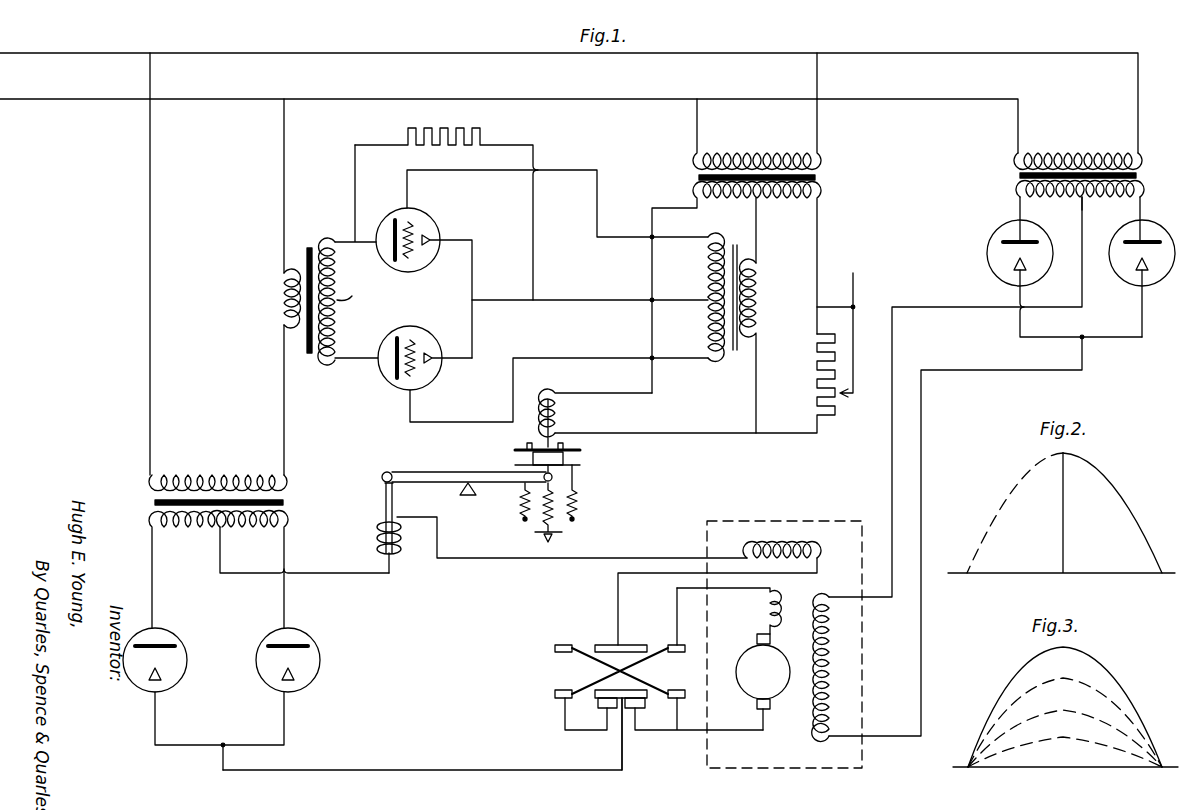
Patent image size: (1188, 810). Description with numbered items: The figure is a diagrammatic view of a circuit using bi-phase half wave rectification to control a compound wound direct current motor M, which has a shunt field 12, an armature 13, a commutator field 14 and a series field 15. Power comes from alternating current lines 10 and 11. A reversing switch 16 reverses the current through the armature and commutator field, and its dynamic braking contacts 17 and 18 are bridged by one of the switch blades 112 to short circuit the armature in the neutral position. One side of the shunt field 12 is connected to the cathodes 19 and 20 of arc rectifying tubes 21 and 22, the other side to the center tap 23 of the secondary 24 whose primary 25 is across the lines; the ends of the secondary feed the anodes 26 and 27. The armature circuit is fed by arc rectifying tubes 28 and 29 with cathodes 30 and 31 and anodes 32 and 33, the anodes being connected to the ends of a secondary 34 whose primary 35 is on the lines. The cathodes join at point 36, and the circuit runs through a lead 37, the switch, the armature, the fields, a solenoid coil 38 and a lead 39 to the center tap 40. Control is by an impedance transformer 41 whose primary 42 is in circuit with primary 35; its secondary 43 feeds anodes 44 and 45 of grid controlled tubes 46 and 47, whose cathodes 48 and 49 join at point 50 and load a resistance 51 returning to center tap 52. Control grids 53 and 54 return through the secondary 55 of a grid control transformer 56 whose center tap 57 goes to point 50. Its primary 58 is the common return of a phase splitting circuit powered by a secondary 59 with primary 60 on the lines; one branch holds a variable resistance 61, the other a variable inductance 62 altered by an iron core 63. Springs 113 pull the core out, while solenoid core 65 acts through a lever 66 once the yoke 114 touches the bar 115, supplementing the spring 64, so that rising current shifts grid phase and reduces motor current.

The alternating current line 10 is at (98, 62).
The alternating current line 11 is at (97, 108).
The shunt field 12 is at (826, 656).
The armature 13 is at (752, 678).
The commutator field 14 is at (762, 606).
The series field 15 is at (746, 546).
The reversing switch 16 is at (590, 636).
The contact 17 is at (600, 708).
The contact 18 is at (640, 710).
The cathode 19 is at (1046, 267).
The cathode 20 is at (1130, 267).
The arc rectifying tube 21 is at (986, 247).
The arc rectifying tube 22 is at (1112, 240).
The center tap 23 is at (1084, 198).
The secondary 24 is at (1016, 189).
The primary 25 is at (1072, 154).
The anode 26 is at (1030, 238).
The anode 27 is at (1148, 240).
The arc rectifying tube 28 is at (180, 654).
The arc rectifying tube 29 is at (314, 656).
The cathode 30 is at (160, 684).
The cathode 31 is at (298, 684).
The anode 32 is at (203, 673).
The anode 33 is at (314, 652).
The secondary 34 is at (272, 528).
The primary 35 is at (222, 476).
The point 36 is at (226, 744).
The lead 37 is at (398, 768).
The solenoid coil 38 is at (393, 556).
The lead 39 is at (324, 572).
The center tap 40 is at (218, 527).
The impedance transformer 41 is at (312, 238).
The primary 42 is at (282, 300).
The secondary 43 is at (337, 335).
The anode 44 is at (392, 378).
The anode 45 is at (540, 264).
The grid controlled arc rectifying tube 46 is at (524, 363).
The grid controlled arc rectifying tube 47 is at (426, 262).
The cathode 48 is at (438, 360).
The cathode 49 is at (437, 240).
The point 50 is at (478, 300).
The resistance 51 is at (490, 134).
The center tap 52 is at (352, 296).
The control grid 53 is at (415, 376).
The control grid 54 is at (416, 222).
The secondary 55 is at (708, 264).
The grid control transformer 56 is at (736, 368).
The center tap 57 is at (708, 306).
The primary 58 is at (758, 282).
The secondary 59 is at (772, 204).
The primary 60 is at (752, 155).
The variable resistance 61 is at (815, 396).
The variable inductance 62 is at (562, 412).
The iron core 63 is at (558, 435).
The spring 64 is at (540, 520).
The solenoid core 65 is at (386, 500).
The lever 66 is at (431, 470).
The switch blade 112 is at (600, 688).
The spring 113 is at (612, 512).
The yoke 114 is at (560, 466).
The bar 115 is at (519, 448).
The compound wound direct current motor M is at (800, 520).